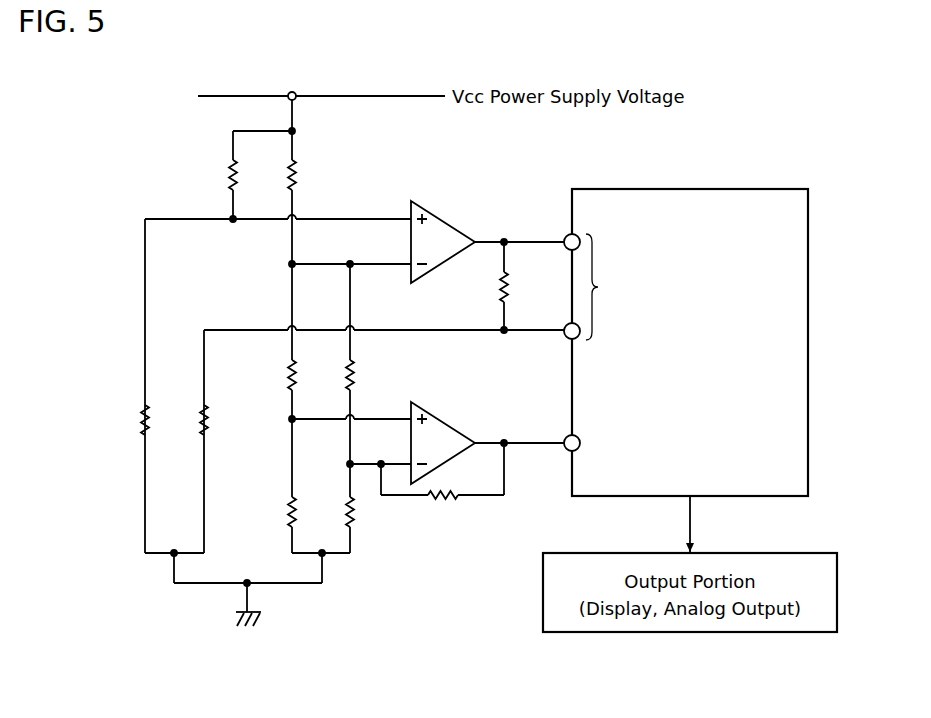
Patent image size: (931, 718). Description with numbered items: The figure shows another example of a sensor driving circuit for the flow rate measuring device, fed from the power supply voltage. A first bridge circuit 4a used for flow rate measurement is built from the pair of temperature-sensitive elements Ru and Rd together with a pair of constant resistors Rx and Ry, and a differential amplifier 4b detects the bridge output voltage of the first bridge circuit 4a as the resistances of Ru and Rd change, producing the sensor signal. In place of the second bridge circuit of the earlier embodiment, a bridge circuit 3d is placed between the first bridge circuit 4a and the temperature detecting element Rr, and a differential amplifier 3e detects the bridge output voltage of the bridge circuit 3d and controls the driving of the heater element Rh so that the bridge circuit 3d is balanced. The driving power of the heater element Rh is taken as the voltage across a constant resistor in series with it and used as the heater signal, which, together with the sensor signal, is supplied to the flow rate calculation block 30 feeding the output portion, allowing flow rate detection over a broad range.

The bridge circuit 3d is at (318, 201).
The differential amplifier 3e is at (437, 214).
The first bridge circuit 4a is at (322, 432).
The differential amplifier 4b is at (443, 421).
The flow rate calculation portion 30 is at (770, 200).